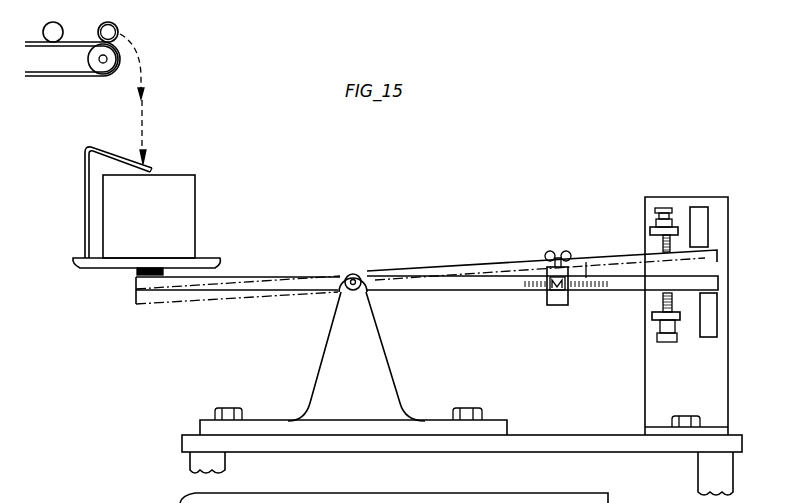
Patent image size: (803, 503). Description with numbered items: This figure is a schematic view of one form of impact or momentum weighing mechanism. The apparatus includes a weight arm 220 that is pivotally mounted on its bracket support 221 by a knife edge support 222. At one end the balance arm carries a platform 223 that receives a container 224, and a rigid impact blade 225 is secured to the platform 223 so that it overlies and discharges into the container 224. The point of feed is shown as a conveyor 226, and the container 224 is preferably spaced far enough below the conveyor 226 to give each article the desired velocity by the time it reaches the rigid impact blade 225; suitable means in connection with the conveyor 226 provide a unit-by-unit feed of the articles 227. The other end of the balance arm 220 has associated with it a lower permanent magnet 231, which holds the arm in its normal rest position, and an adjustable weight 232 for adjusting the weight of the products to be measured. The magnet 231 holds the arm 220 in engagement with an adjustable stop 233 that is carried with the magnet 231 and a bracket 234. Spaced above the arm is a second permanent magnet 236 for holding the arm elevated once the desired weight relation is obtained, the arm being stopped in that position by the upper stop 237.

The weight arm 220 is at (459, 288).
The bracket support 221 is at (380, 393).
The knife edge support 222 is at (356, 287).
The platform 223 is at (208, 262).
The container 224 is at (163, 226).
The rigid impact blade 225 is at (85, 172).
The conveyor 226 is at (40, 77).
The articles 227 is at (62, 24).
The lower permanent magnet 231 is at (717, 318).
The adjustable weight 232 is at (562, 303).
The adjustable stop 233 is at (662, 302).
The bracket 234 is at (655, 390).
The second permanent magnet 236 is at (702, 233).
The upper stop 237 is at (657, 240).